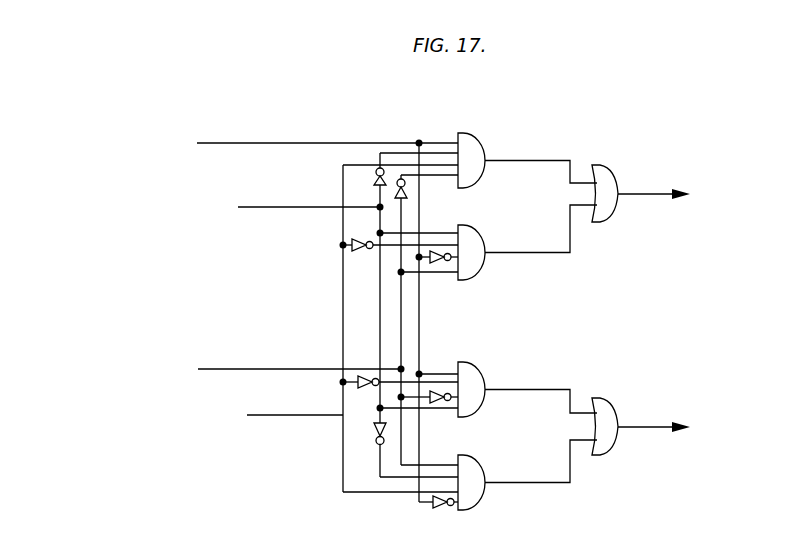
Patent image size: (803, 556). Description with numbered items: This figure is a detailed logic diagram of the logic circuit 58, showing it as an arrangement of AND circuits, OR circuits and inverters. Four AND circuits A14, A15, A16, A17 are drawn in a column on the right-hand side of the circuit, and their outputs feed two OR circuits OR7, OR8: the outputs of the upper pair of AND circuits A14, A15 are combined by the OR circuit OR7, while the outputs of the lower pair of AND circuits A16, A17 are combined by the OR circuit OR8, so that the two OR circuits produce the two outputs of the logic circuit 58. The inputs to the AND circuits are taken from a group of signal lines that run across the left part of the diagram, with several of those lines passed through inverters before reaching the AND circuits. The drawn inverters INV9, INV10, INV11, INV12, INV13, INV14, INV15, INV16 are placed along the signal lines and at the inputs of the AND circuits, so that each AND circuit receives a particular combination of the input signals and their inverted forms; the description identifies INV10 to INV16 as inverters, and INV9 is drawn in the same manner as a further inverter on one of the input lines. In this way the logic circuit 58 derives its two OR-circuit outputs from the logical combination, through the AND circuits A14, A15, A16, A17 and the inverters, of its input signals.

The logic circuit 58 is at (676, 136).
The AND circuit A14 is at (527, 156).
The AND circuit A15 is at (527, 242).
The AND circuit A16 is at (527, 388).
The AND circuit A17 is at (527, 475).
The OR circuit OR7 is at (641, 183).
The OR circuit OR8 is at (641, 420).
The inverter INV 9 INV9 is at (370, 253).
The inverter INV10 is at (376, 175).
The inverter INV11 is at (406, 189).
The inverter INV12 is at (436, 262).
The inverter INV13 is at (363, 378).
The inverter INV14 is at (433, 402).
The inverter INV15 is at (378, 430).
The inverter INV16 is at (443, 516).